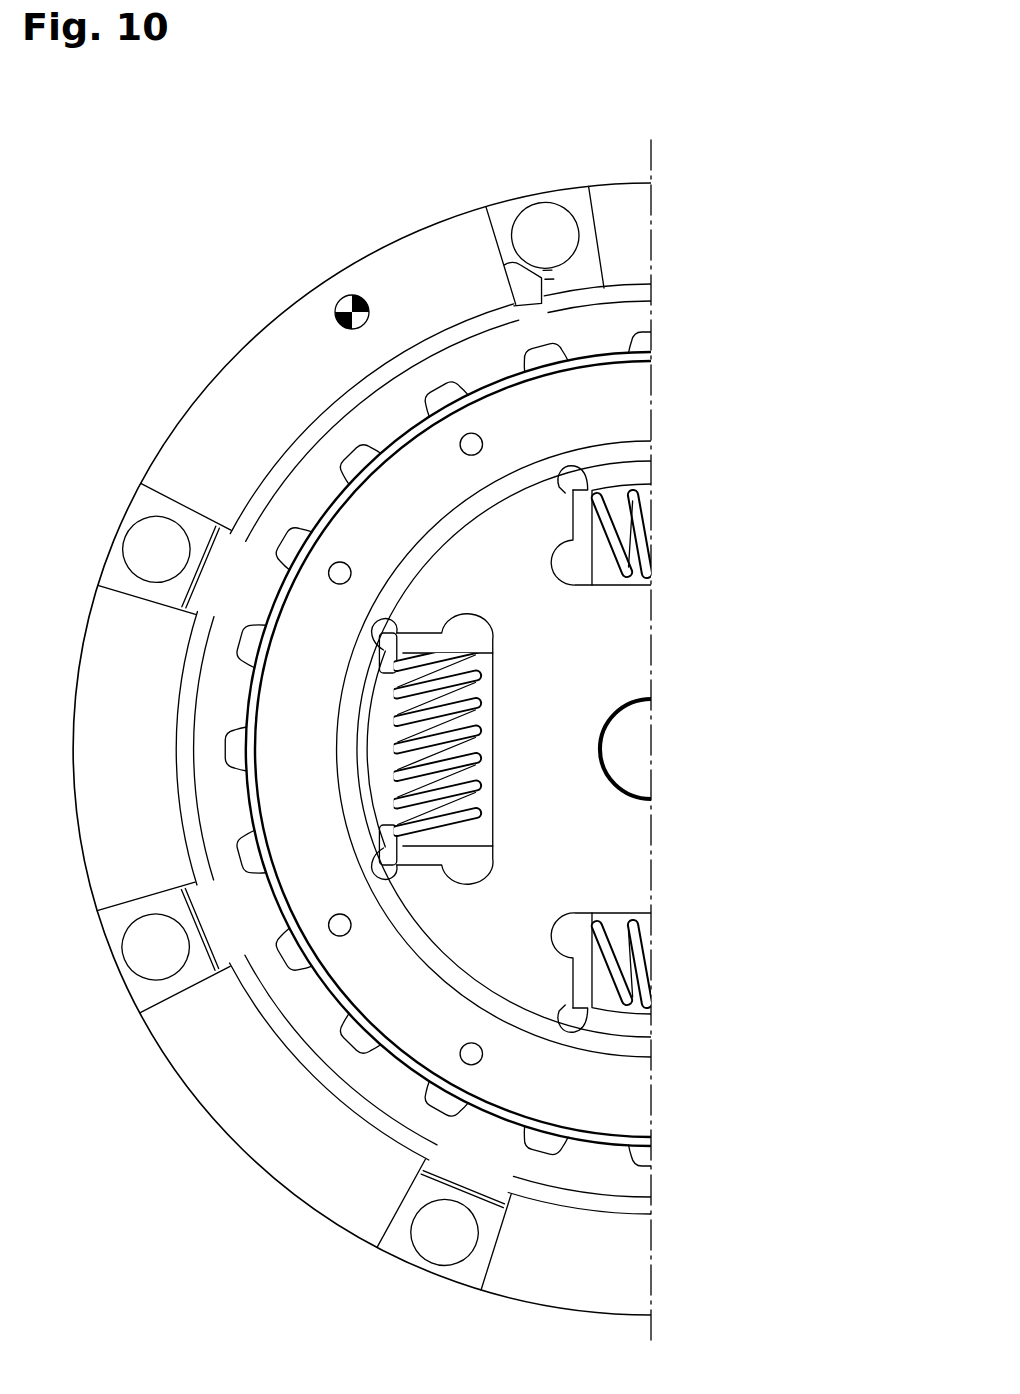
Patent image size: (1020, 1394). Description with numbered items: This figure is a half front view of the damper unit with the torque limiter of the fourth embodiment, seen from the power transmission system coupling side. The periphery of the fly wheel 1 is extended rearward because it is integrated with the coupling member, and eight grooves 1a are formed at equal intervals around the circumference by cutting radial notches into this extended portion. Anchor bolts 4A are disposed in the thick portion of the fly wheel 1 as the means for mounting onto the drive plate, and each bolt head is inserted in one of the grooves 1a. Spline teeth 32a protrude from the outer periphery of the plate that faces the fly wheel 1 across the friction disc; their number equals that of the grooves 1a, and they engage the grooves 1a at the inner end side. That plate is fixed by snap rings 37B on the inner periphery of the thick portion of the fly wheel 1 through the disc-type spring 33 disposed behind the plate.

The fly wheel 1 is at (240, 363).
The grooves 1a is at (498, 232).
The anchor bolts 4A is at (543, 213).
The spline teeth 32a is at (595, 282).
The snap rings 37B is at (270, 472).
The disc-type spring 33 is at (318, 508).